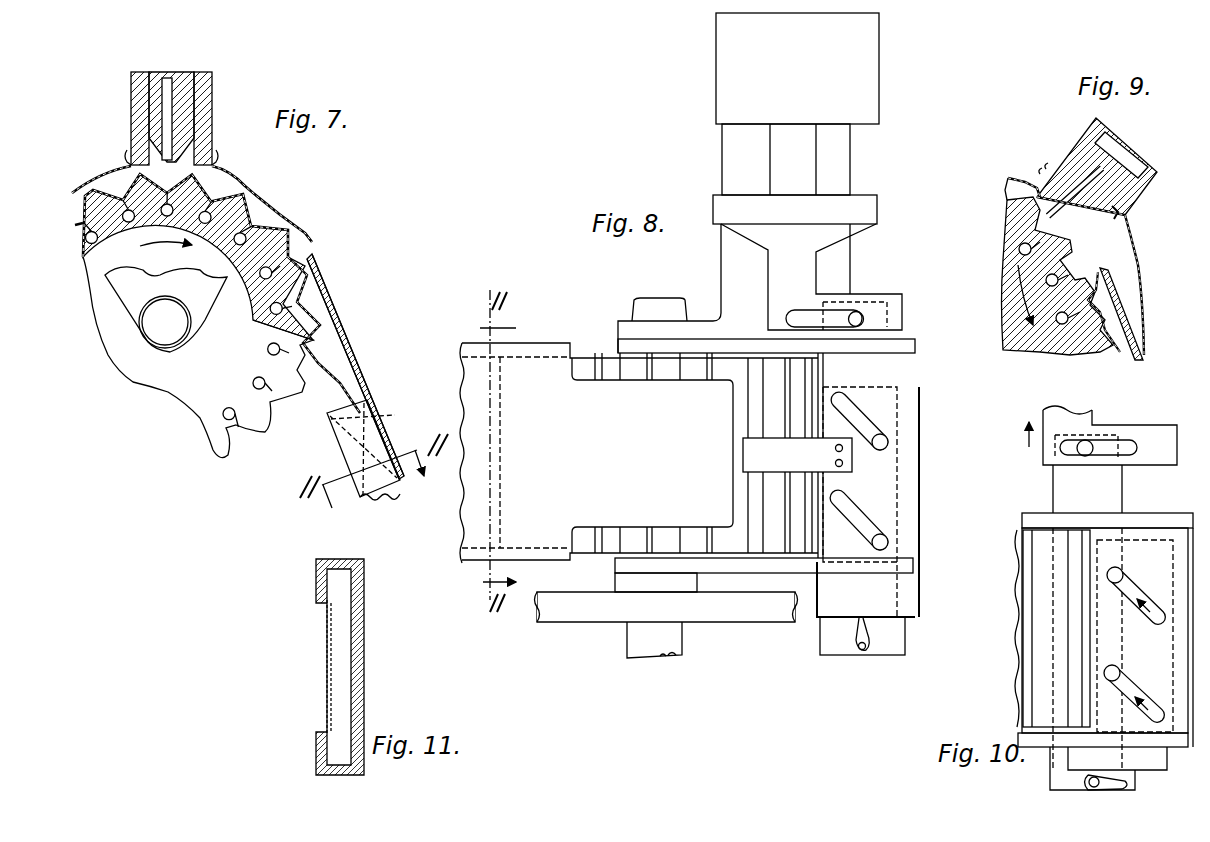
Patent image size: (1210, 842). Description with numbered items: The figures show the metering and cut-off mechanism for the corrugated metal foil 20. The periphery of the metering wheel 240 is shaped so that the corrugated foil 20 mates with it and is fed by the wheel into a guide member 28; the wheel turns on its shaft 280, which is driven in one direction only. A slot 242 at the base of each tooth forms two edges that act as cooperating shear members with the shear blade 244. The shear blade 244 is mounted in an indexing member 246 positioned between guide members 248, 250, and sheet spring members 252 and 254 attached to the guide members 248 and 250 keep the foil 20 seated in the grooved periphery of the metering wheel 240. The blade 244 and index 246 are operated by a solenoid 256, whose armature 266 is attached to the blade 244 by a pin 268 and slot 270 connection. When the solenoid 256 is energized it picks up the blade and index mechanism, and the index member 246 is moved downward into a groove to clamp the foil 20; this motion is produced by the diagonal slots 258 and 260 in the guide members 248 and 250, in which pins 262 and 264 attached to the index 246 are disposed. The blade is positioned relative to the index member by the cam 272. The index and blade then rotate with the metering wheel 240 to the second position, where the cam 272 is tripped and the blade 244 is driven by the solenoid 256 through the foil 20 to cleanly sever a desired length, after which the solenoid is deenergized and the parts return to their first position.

In FIG. 7, the metal foil 20 is at (76, 224).
In FIG. 8, the metal foil 20 is at (605, 340).
In FIG. 9, the metal foil 20 is at (1102, 322).
In FIG. 10, the metal foil 20 is at (1040, 652).
In FIG. 11, the metal foil 20 is at (333, 618).
In FIG. 7, the guide member 28 is at (370, 418).
In FIG. 8, the guide member 28 is at (538, 380).
In FIG. 9, the guide member 28 is at (1139, 344).
In FIG. 11, the guide member 28 is at (361, 682).
In FIG. 7, the metering wheel 240 is at (176, 395).
In FIG. 9, the metering wheel 240 is at (1002, 247).
In FIG. 7, the slot 242 is at (80, 240).
In FIG. 7, the shear blade 244 is at (172, 138).
In FIG. 8, the shear blade 244 is at (893, 643).
In FIG. 9, the shear blade 244 is at (1116, 216).
In FIG. 10, the shear blade 244 is at (1110, 496).
In FIG. 7, the indexing member 246 is at (149, 106).
In FIG. 8, the indexing member 246 is at (921, 602).
In FIG. 9, the indexing member 246 is at (1082, 160).
In FIG. 10, the indexing member 246 is at (1135, 636).
In FIG. 7, the guide member 248 is at (132, 78).
In FIG. 9, the guide member 248 is at (1108, 130).
In FIG. 7, the guide member 250 is at (206, 100).
In FIG. 9, the guide member 250 is at (1148, 168).
In FIG. 7, the sheet spring member 252 is at (96, 178).
In FIG. 9, the sheet spring member 252 is at (1012, 175).
In FIG. 7, the sheet spring member 254 is at (268, 206).
In FIG. 8, the sheet spring member 254 is at (752, 455).
In FIG. 9, the sheet spring member 254 is at (1124, 277).
In FIG. 8, the solenoid 256 is at (882, 82).
In FIG. 8, the diagonal slot 258 is at (872, 432).
In FIG. 10, the diagonal slot 258 is at (1143, 598).
In FIG. 8, the diagonal slot 260 is at (872, 530).
In FIG. 10, the diagonal slot 260 is at (1135, 690).
In FIG. 8, the pin 262 is at (886, 442).
In FIG. 10, the pin 262 is at (1120, 572).
In FIG. 8, the pin 264 is at (886, 545).
In FIG. 10, the pin 264 is at (1113, 667).
In FIG. 8, the armature 266 is at (820, 182).
In FIG. 8, the pin 268 is at (862, 311).
In FIG. 10, the pin 268 is at (1085, 440).
In FIG. 8, the slot 270 is at (810, 316).
In FIG. 10, the slot 270 is at (1110, 429).
In FIG. 8, the cam 272 is at (856, 650).
In FIG. 10, the cam 272 is at (1088, 784).
In FIG. 8, the shaft 280 is at (628, 640).